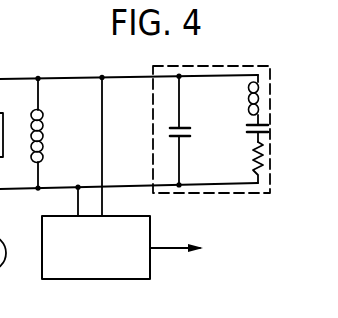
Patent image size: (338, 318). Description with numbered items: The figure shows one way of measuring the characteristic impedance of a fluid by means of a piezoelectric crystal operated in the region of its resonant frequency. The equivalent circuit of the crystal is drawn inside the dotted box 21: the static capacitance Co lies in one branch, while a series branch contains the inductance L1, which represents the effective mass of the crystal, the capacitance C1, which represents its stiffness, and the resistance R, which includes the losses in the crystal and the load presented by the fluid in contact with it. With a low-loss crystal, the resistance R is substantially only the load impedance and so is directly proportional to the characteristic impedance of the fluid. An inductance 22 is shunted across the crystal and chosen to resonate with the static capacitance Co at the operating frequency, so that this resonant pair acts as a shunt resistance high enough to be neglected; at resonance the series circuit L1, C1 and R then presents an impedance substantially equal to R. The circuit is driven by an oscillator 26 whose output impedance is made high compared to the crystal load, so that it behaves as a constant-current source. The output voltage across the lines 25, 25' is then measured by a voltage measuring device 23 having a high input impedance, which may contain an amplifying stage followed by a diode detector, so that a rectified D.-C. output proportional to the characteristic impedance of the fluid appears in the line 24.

The dotted box 21 is at (213, 65).
The inductance 22 is at (46, 135).
The voltage measuring device 23 is at (151, 230).
The line 24 is at (172, 249).
The line 25 is at (129, 65).
The line 25' is at (129, 176).
The oscillator 26 is at (5, 123).
The static capacitance Co is at (193, 131).
The inductance L1 is at (252, 98).
The capacitance C1 is at (246, 127).
The resistance R is at (254, 157).